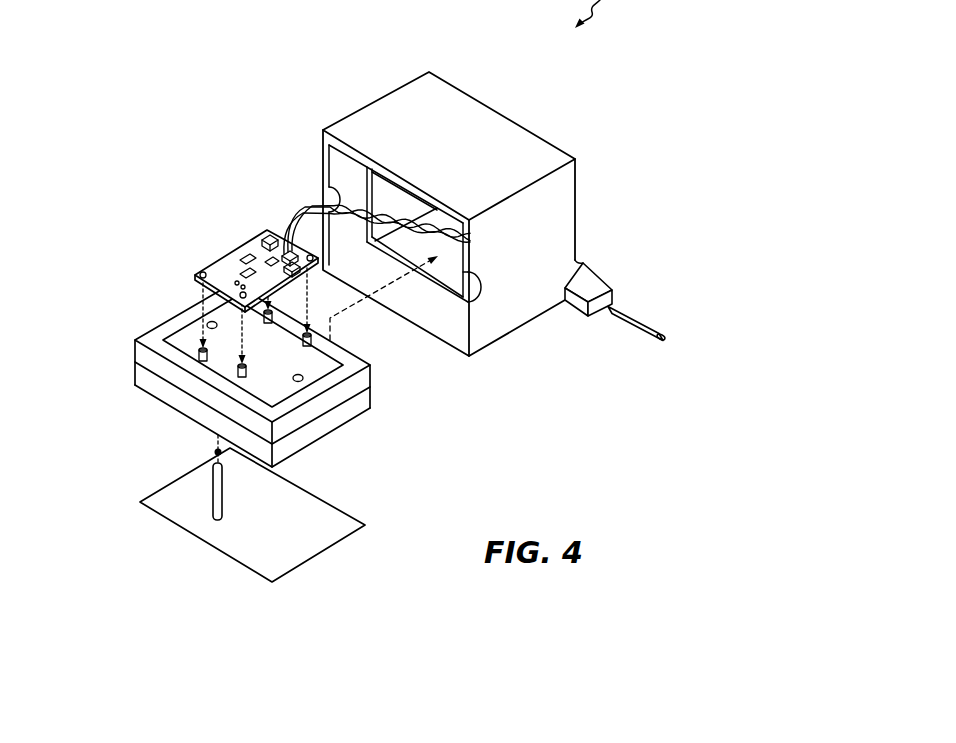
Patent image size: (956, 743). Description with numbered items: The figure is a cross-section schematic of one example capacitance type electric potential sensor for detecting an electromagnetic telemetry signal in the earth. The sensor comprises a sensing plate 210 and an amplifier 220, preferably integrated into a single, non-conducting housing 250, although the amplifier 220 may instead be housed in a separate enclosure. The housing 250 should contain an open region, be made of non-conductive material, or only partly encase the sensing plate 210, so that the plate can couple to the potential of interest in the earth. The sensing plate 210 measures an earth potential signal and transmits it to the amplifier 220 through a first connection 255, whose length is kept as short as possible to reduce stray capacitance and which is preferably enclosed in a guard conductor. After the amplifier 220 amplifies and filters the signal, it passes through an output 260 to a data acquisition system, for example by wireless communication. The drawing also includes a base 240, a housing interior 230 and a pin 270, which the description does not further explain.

The sensing plate 210 is at (372, 510).
The amplifier 220 is at (216, 242).
The housing cavity 230 is at (484, 372).
The base 240 is at (138, 324).
The housing 250 is at (365, 97).
The first connection 255 is at (215, 452).
The output 260 is at (668, 313).
The pin 270 is at (198, 455).